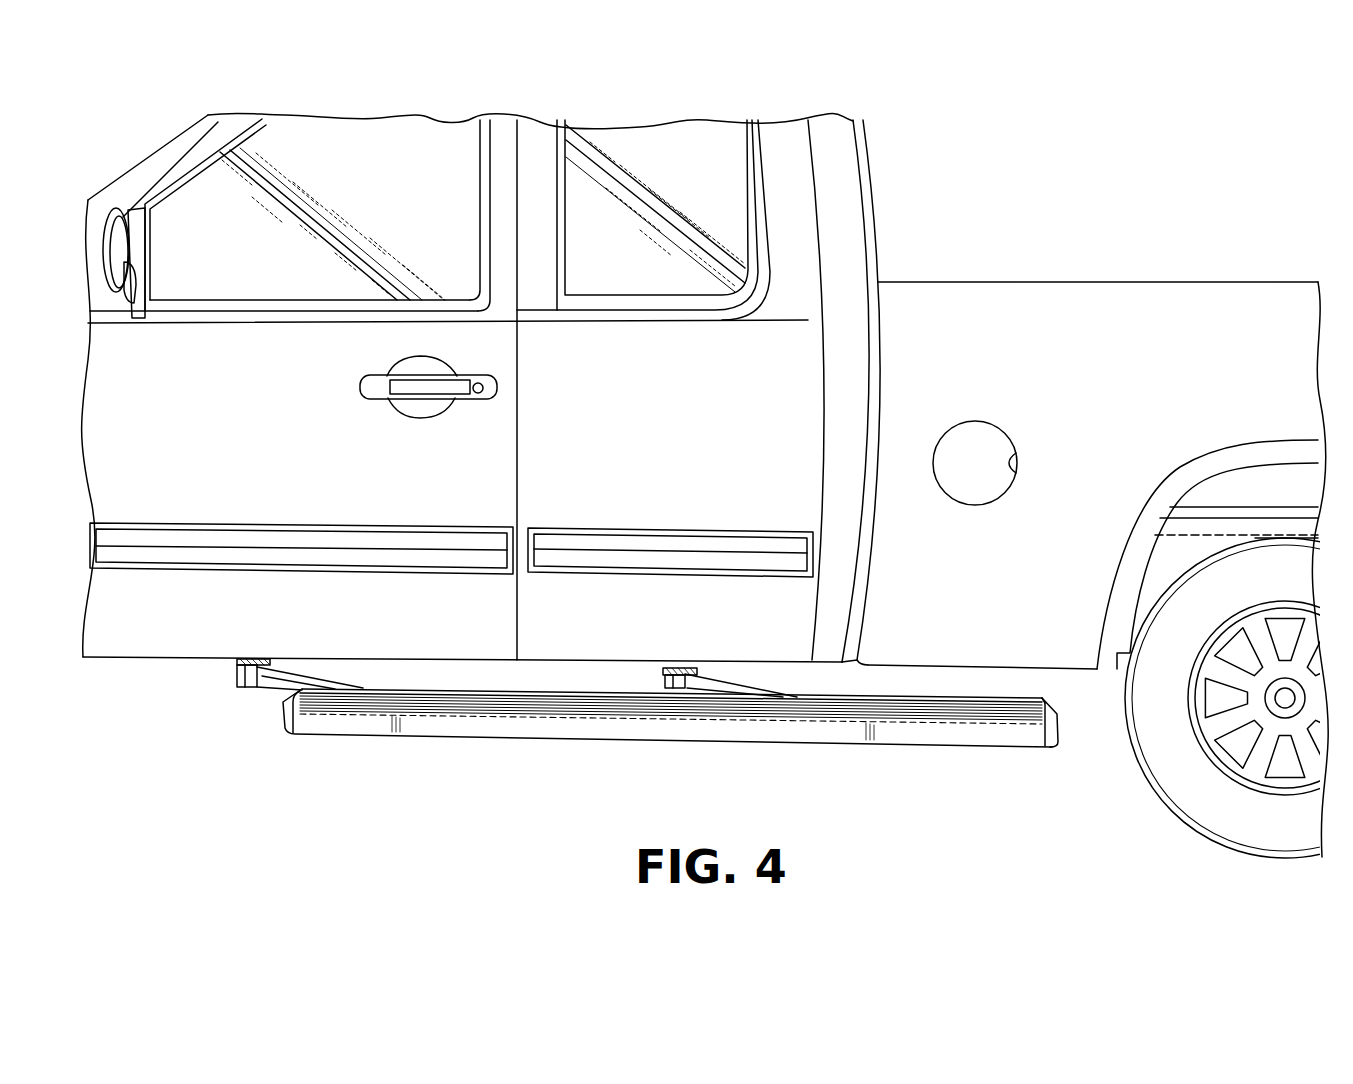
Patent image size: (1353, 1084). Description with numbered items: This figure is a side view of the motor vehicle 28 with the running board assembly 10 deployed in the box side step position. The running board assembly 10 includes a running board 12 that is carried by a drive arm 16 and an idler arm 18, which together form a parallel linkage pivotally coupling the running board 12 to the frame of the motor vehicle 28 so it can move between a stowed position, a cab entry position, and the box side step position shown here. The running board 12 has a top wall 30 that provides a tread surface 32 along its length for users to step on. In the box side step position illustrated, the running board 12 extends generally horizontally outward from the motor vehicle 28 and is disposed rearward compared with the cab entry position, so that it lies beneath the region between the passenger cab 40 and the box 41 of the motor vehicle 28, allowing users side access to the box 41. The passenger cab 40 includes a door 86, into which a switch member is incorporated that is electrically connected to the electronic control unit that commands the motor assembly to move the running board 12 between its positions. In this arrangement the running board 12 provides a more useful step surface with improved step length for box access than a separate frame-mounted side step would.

The running board assembly 10 is at (383, 751).
The running board 12 is at (940, 745).
The drive arm 16 is at (302, 672).
The idler arm 18 is at (728, 684).
The motor vehicle 28 is at (1127, 318).
The top wall 30 is at (1062, 712).
The tread surface 32 is at (590, 697).
The passenger cab 40 is at (205, 203).
The box 41 is at (1029, 282).
The door 86 is at (560, 637).